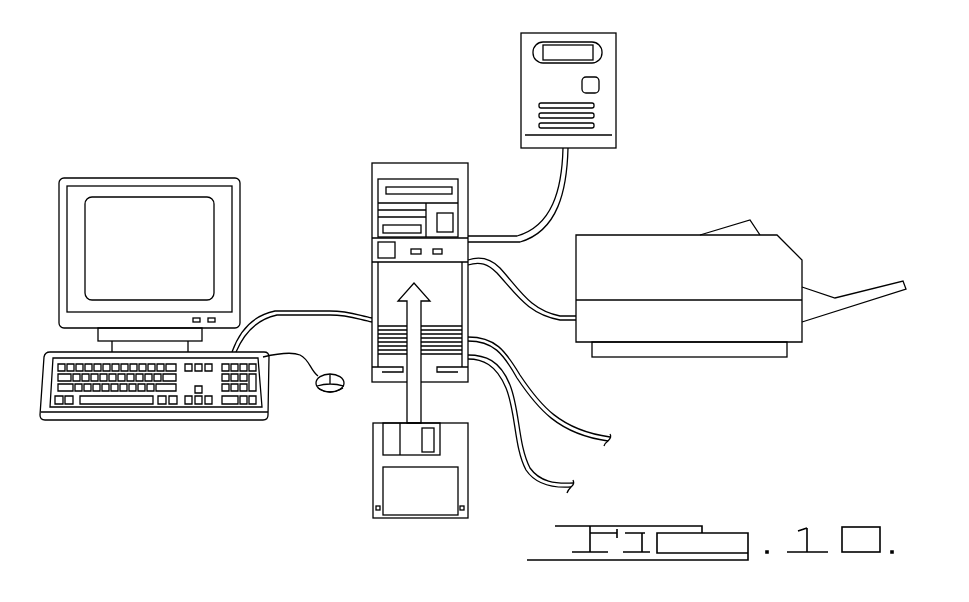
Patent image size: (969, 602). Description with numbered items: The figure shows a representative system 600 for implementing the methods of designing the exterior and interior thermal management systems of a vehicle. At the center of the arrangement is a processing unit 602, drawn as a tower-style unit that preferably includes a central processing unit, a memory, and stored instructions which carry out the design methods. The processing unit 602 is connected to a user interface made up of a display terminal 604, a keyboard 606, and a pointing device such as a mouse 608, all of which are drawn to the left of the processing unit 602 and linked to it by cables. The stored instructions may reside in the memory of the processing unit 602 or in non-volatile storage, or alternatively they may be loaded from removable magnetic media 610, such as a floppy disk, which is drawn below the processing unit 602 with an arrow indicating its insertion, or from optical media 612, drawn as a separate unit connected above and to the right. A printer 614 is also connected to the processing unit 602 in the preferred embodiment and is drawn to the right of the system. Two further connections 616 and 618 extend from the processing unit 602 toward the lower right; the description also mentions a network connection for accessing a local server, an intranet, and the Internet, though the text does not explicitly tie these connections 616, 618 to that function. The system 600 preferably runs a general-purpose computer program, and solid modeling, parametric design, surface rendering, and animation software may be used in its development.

The system 600 is at (302, 84).
The processing unit 602 is at (420, 163).
The display terminal 604 is at (170, 178).
The keyboard 606 is at (143, 420).
The mouse 608 is at (328, 394).
The removable magnetic media 610 is at (373, 482).
The optical media 612 is at (613, 59).
The printer 614 is at (667, 235).
The cable / connection 616 is at (542, 475).
The cable / connection 618 is at (563, 417).